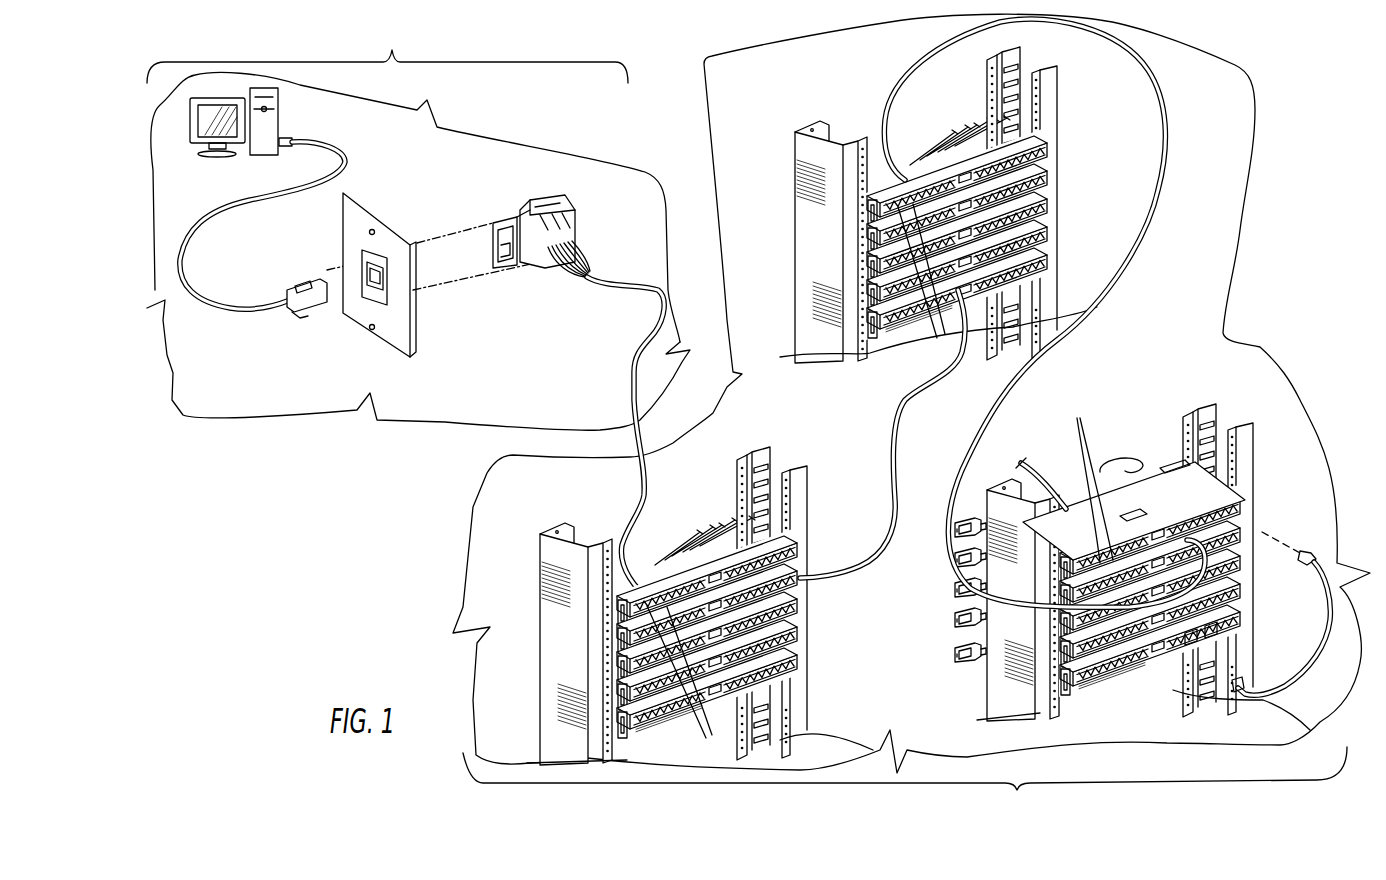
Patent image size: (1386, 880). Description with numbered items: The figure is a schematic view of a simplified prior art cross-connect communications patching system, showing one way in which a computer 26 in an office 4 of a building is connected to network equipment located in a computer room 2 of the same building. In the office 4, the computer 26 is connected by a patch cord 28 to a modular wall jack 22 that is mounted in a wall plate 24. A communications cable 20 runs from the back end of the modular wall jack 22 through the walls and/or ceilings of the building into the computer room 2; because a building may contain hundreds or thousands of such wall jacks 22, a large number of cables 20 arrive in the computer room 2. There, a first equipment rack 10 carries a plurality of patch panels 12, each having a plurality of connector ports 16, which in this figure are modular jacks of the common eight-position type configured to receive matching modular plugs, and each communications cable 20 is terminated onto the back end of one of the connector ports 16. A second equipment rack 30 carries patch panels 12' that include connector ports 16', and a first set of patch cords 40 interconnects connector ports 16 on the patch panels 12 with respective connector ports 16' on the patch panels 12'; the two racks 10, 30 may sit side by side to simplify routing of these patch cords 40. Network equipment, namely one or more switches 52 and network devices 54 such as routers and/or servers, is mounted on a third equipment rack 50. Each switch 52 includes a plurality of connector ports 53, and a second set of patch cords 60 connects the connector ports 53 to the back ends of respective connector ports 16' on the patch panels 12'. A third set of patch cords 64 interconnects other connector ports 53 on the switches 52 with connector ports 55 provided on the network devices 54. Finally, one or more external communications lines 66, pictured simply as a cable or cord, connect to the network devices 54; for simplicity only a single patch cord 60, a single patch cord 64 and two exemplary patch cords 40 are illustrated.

The computer room 2 is at (911, 414).
The office 4 is at (418, 224).
The first equipment rack 10 is at (553, 557).
The patch panels 12 is at (741, 629).
The patch panels 12' is at (995, 217).
The connector ports 16 is at (687, 686).
The connector ports 16' is at (927, 284).
The communications cable 20 is at (613, 282).
The modular wall jack 22 is at (520, 207).
The wall plate 24 is at (415, 340).
The computer 26 is at (278, 104).
The patch cord 28 is at (188, 252).
The second equipment rack 30 is at (818, 160).
The first set of patch cords 40 is at (917, 420).
The third equipment rack 50 is at (1265, 410).
The switches 52 is at (1243, 535).
The connector ports 53 is at (1090, 477).
The network devices 54 is at (1052, 692).
The connector ports 55 is at (1243, 612).
The second set of patch cords 60 is at (1157, 210).
The third set of patch cords 64 is at (1313, 647).
The external communications lines 66 is at (1033, 462).